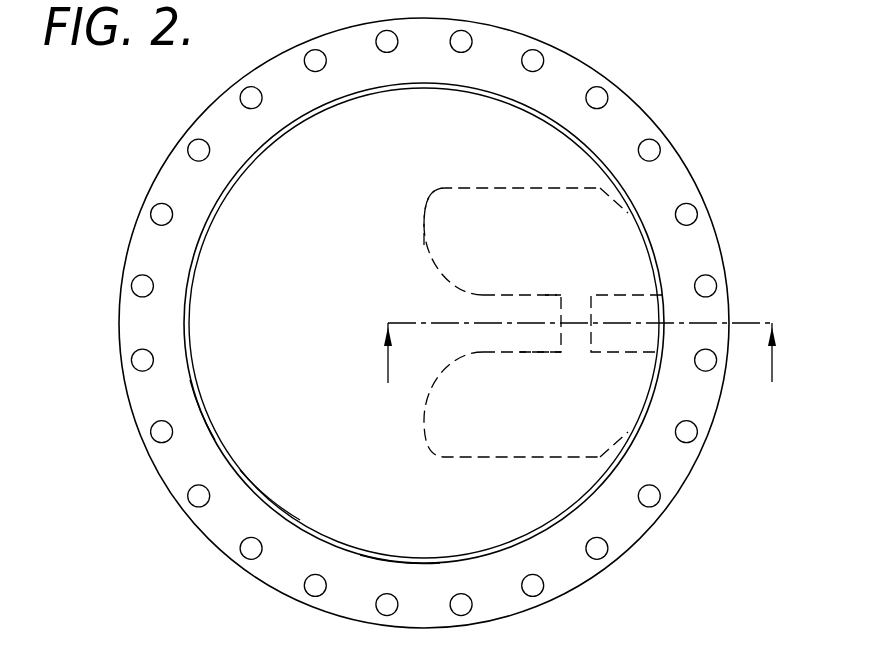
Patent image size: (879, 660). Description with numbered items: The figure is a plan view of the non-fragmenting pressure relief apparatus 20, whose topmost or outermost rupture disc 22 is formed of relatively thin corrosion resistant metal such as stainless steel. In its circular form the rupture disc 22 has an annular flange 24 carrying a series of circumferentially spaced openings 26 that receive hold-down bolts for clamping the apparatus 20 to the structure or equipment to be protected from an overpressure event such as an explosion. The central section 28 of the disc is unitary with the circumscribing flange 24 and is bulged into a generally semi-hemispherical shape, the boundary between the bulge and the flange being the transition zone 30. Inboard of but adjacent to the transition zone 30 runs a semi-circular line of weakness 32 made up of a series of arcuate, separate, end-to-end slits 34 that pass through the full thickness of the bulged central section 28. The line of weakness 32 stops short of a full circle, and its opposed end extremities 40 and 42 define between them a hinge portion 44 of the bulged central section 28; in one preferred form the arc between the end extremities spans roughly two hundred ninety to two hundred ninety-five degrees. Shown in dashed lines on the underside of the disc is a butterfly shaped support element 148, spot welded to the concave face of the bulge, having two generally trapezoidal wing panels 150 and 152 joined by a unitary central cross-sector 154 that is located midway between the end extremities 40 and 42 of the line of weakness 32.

The apparatus 20 is at (178, 101).
The rupture disc 22 is at (630, 87).
The annular flange 24 is at (667, 180).
The openings 26 is at (530, 58).
The central section 28 is at (240, 287).
The transition zone 30 is at (203, 412).
The line of weakness 32 is at (282, 494).
The slits 34 is at (400, 555).
The end extremity 40 is at (626, 430).
The end extremity 42 is at (624, 210).
The hinge portion 44 is at (637, 364).
The support element 148 is at (412, 239).
The wing panel 150 is at (470, 188).
The wing panel 152 is at (470, 460).
The central cross-sector 154 is at (553, 306).